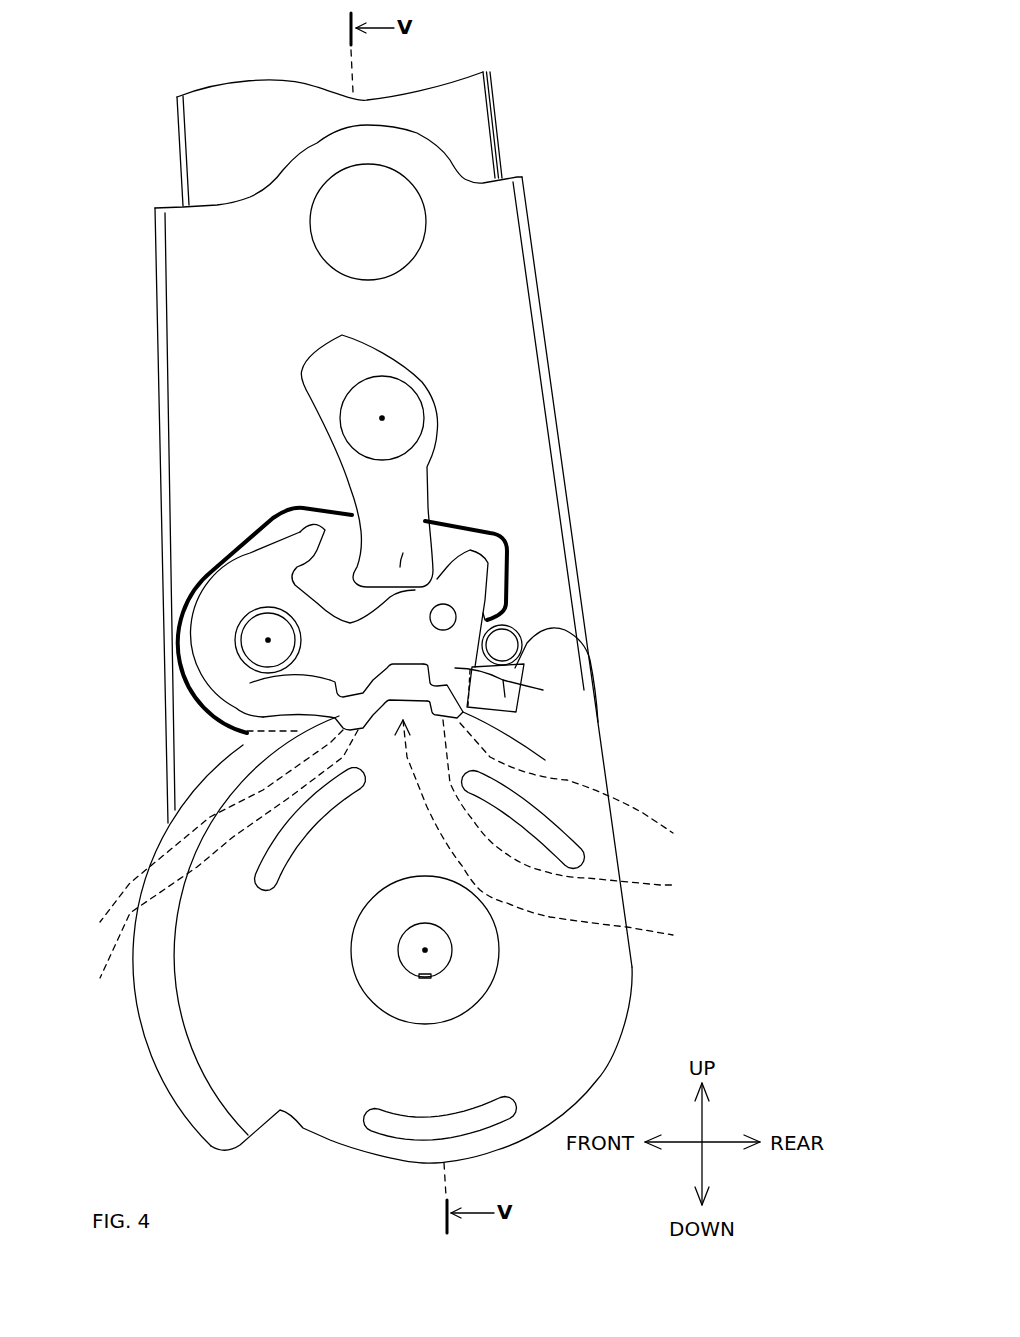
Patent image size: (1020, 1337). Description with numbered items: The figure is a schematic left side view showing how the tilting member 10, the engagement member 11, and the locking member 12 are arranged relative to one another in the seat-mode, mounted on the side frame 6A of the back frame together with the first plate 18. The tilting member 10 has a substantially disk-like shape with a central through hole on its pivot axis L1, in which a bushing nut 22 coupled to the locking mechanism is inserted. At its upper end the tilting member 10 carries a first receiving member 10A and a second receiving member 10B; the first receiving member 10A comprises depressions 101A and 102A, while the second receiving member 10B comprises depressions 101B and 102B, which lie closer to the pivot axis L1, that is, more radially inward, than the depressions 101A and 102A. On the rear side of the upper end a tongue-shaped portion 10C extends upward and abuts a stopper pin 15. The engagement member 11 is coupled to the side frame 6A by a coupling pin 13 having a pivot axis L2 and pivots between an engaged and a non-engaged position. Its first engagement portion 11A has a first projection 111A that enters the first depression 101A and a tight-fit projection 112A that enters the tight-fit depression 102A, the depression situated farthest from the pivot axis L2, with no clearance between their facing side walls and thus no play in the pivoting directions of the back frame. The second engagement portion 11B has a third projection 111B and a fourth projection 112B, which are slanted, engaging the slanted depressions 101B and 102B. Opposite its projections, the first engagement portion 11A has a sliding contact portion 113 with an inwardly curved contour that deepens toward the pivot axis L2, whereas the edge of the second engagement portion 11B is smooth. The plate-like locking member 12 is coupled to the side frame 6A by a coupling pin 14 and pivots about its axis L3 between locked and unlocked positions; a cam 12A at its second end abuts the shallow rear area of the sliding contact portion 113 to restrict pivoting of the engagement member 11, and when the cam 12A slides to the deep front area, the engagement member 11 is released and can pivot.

The side frame 6A is at (215, 150).
The first plate 18 is at (185, 355).
The locking member 12 is at (402, 482).
The coupling pin 14 is at (400, 427).
The cam 12A is at (400, 567).
The pivot axis of the locking member L3 is at (383, 417).
The engagement member 11 is at (388, 709).
The first engagement portion 11A is at (220, 617).
The second engagement portion 11B is at (220, 567).
The coupling pin 13 is at (257, 650).
The pivot axis of the engagement member L2 is at (268, 640).
The first projection 111A is at (330, 683).
The third projection 111B is at (197, 832).
The second projection 112A is at (500, 699).
The fourth projection 112B is at (592, 784).
The sliding contact portion 113 is at (460, 545).
The stopper pin 15 is at (503, 640).
The tilting member 10 is at (388, 923).
The first receiving member 10A is at (505, 697).
The second receiving member 10B is at (554, 834).
The tongue-shaped portion 10C is at (558, 660).
The first depression 101A is at (337, 718).
The third depression 101B is at (205, 860).
The second depression 102A is at (503, 680).
The fourth depression 102B is at (583, 807).
The bushing nut 22 is at (473, 967).
The pivot axis of the tilting member L1 is at (425, 950).